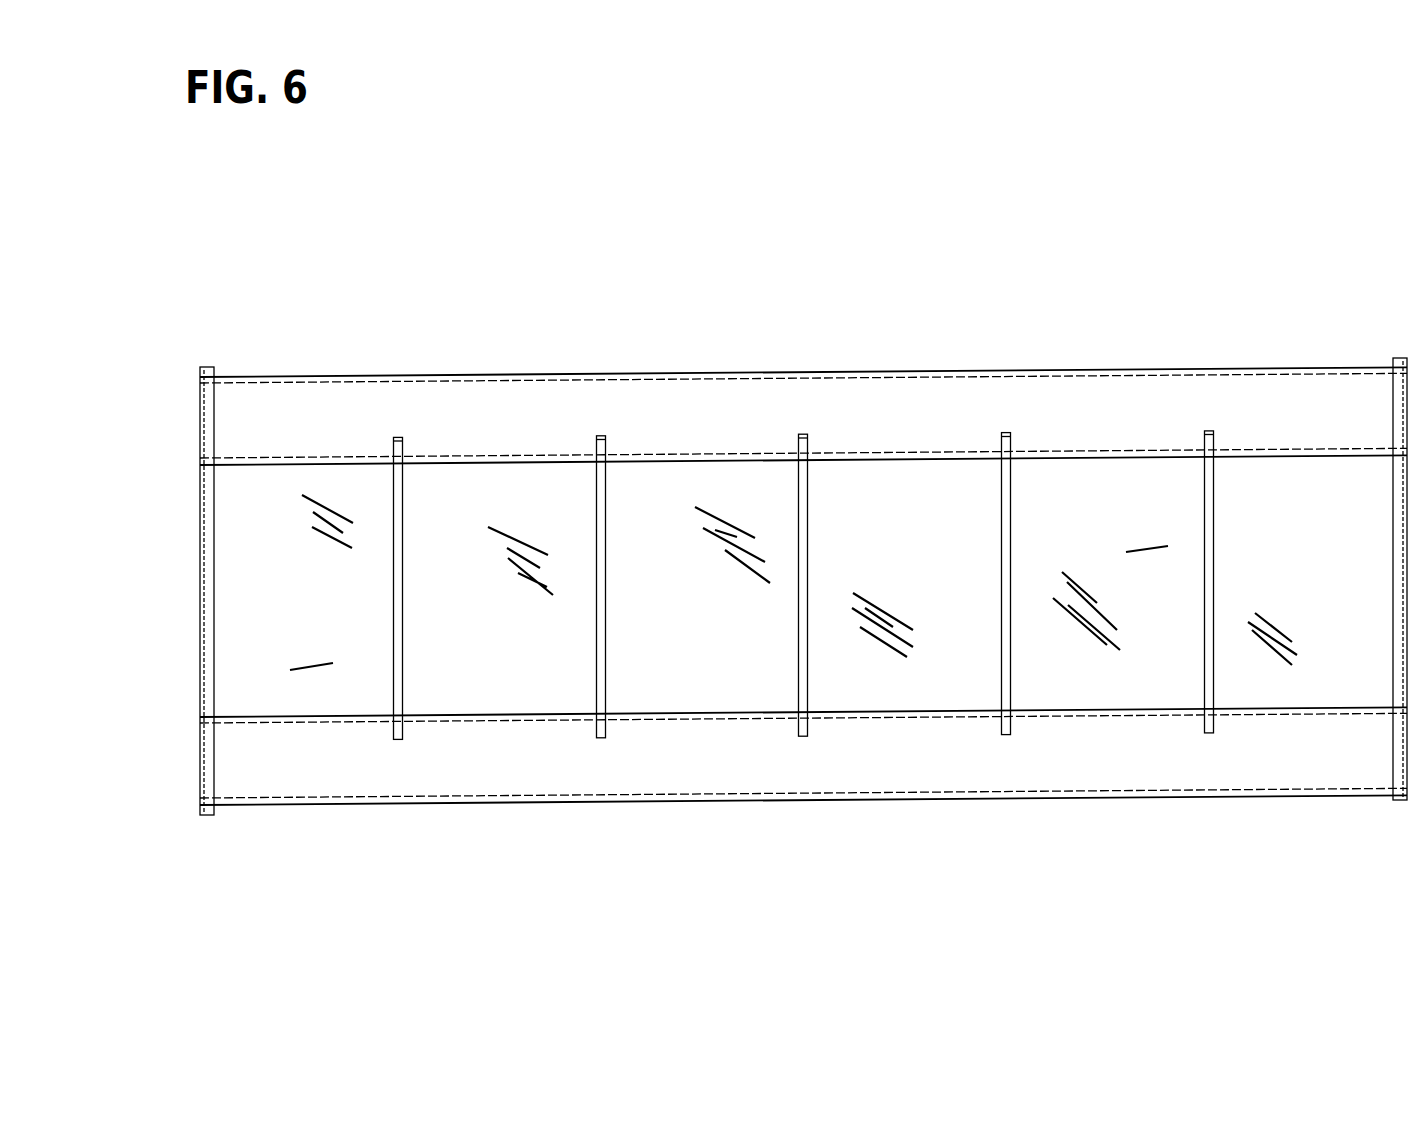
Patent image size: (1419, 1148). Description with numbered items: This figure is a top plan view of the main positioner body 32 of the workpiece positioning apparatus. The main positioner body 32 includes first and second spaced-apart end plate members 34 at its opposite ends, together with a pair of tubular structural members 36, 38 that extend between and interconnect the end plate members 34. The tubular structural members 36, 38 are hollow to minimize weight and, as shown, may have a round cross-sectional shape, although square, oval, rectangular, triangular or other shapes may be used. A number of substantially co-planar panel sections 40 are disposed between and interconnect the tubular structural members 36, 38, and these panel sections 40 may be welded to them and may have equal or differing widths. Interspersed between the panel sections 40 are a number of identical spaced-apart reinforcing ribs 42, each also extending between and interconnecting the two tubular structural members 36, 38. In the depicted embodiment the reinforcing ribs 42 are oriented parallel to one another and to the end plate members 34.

The main positioner body 32 is at (1010, 313).
The end plate member 34 is at (217, 568).
The tubular structural member 36 is at (825, 368).
The tubular structural member 38 is at (840, 798).
The panel section 40 is at (793, 582).
The reinforcing rib 42 is at (607, 600).